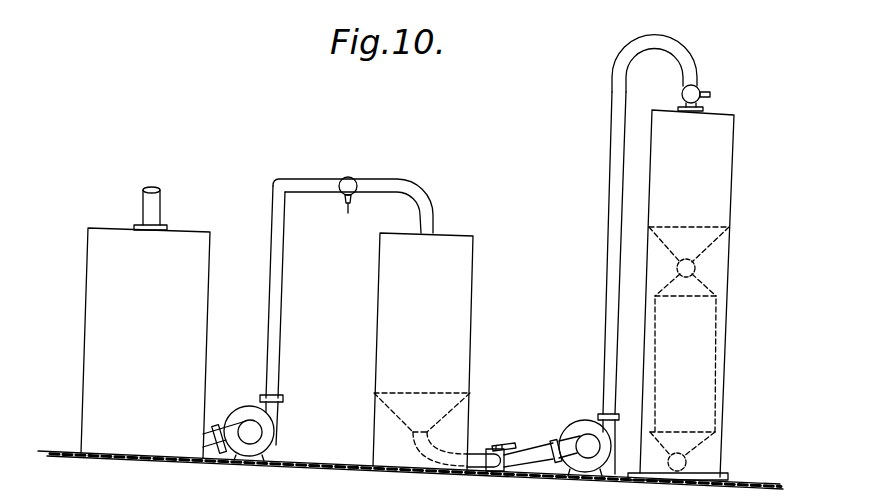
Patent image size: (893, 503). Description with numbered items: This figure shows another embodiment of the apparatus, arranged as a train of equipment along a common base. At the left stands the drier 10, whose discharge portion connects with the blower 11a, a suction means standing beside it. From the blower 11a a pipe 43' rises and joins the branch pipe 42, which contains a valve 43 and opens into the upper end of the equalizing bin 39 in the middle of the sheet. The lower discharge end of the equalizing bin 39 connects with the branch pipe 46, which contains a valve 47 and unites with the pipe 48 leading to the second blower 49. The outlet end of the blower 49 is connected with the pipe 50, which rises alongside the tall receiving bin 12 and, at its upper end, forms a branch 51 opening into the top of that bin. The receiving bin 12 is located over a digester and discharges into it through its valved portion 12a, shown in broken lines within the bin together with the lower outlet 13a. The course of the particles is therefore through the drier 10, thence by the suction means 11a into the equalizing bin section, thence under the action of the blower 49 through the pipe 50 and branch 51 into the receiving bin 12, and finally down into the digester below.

The drier 10 is at (100, 286).
The blower 11a is at (248, 406).
The receiving bin 12 is at (723, 182).
The valved portion 12a is at (697, 268).
The outlet 13a is at (686, 462).
The equalizing bin 39 is at (463, 340).
The branch pipe 42 is at (315, 180).
The valve 43 is at (333, 210).
The pipe 43' is at (297, 315).
The branch pipe 46 is at (477, 450).
The valve 47 is at (507, 445).
The pipe 48 is at (527, 450).
The blower 49 is at (577, 425).
The pipe 50 is at (609, 298).
The branch 51 is at (692, 74).